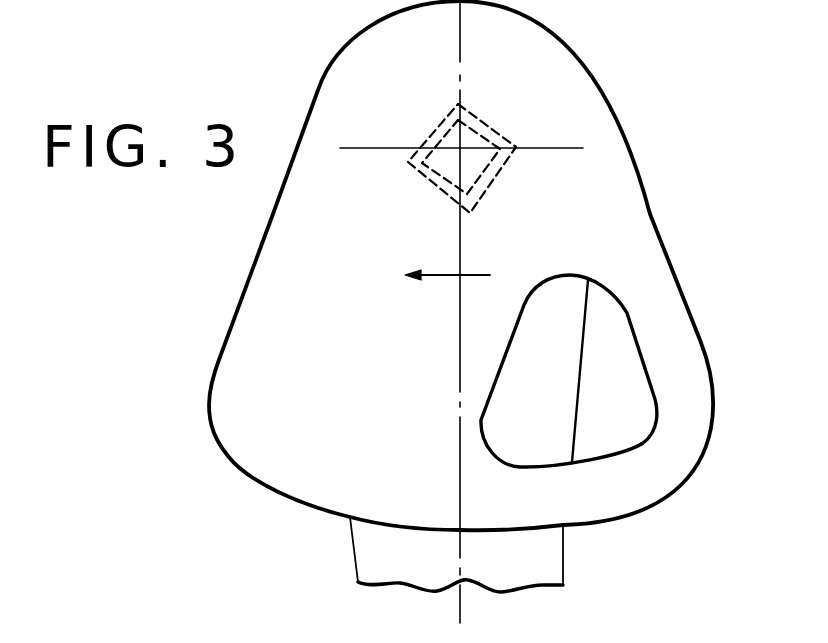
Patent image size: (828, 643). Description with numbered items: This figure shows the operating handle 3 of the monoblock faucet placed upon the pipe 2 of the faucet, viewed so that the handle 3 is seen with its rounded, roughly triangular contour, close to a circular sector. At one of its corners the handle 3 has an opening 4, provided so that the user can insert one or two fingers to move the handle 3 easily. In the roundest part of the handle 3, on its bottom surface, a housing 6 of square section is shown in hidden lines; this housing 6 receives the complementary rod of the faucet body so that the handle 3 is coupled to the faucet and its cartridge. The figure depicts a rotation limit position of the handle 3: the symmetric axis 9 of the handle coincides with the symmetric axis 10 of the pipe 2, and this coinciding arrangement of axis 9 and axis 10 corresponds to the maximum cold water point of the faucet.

The pipe 2 is at (565, 320).
The operating handle 3 is at (240, 330).
The opening 4 is at (633, 378).
The housing 6 is at (472, 140).
The symmetric axis of the handle 9 is at (457, 467).
The symmetric axis of the pipe 10 is at (459, 608).